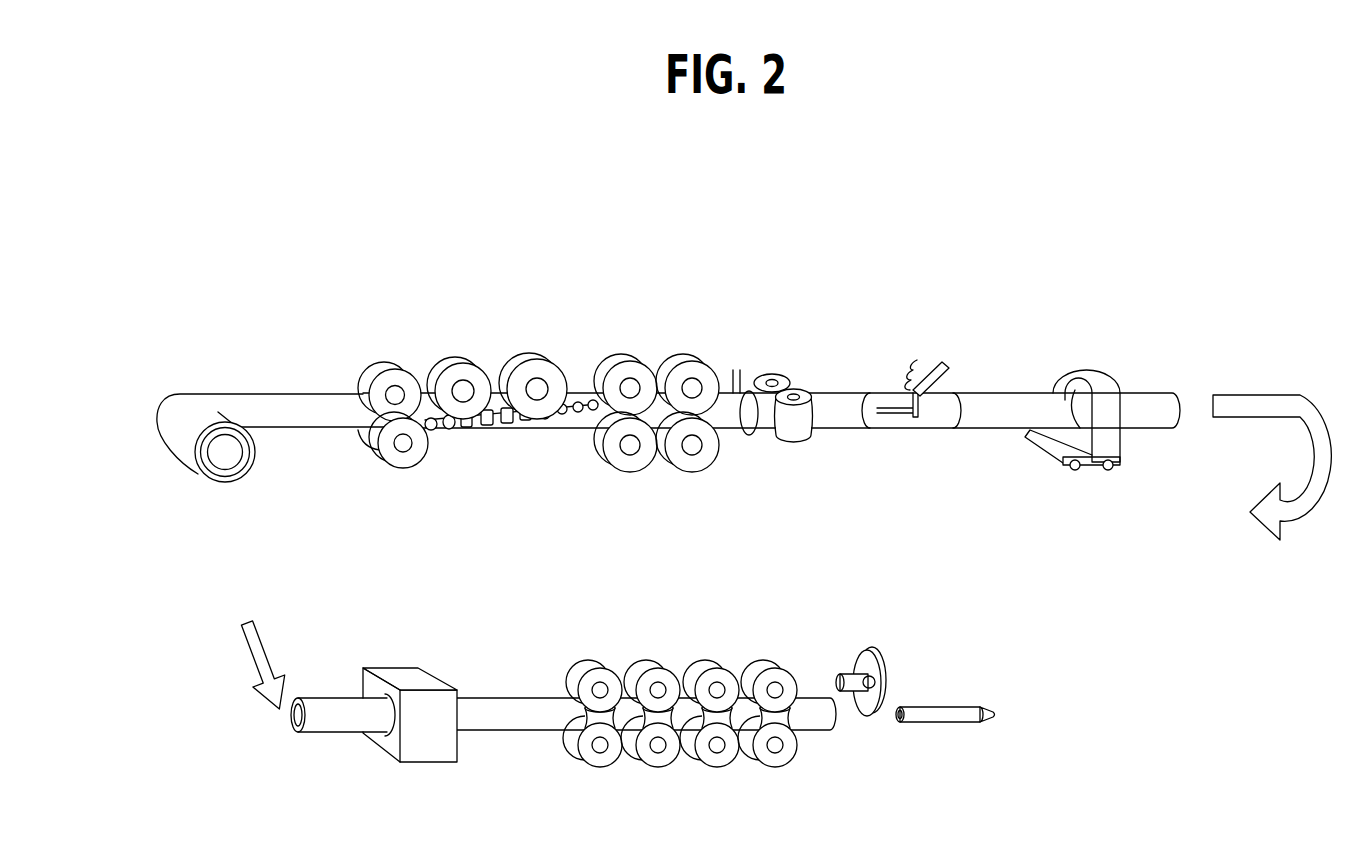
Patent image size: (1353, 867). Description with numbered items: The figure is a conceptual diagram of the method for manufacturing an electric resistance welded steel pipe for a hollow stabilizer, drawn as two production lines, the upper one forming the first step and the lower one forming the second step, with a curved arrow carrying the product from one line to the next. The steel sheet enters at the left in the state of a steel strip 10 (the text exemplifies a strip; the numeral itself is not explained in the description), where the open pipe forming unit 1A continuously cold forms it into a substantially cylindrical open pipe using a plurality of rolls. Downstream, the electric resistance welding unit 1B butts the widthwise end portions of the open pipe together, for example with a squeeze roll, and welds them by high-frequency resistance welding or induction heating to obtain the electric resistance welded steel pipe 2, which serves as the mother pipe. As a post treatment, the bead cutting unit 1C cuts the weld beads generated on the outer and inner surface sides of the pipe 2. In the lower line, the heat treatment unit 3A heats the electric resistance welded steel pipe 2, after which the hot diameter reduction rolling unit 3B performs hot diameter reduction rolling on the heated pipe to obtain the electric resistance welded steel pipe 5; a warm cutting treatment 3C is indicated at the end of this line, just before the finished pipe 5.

The pipe 10 is at (283, 398).
The open pipe forming unit 1A is at (459, 331).
The electric resistance welding unit 1B is at (790, 353).
The bead cutting unit 1C is at (967, 353).
The electric resistance welded steel pipe 2 is at (1145, 405).
The heat treatment unit 3A is at (427, 643).
The hot diameter reduction rolling unit 3B is at (700, 631).
The warm cutting treatment 3C is at (887, 625).
The electric resistance welded steel pipe 5 is at (947, 710).